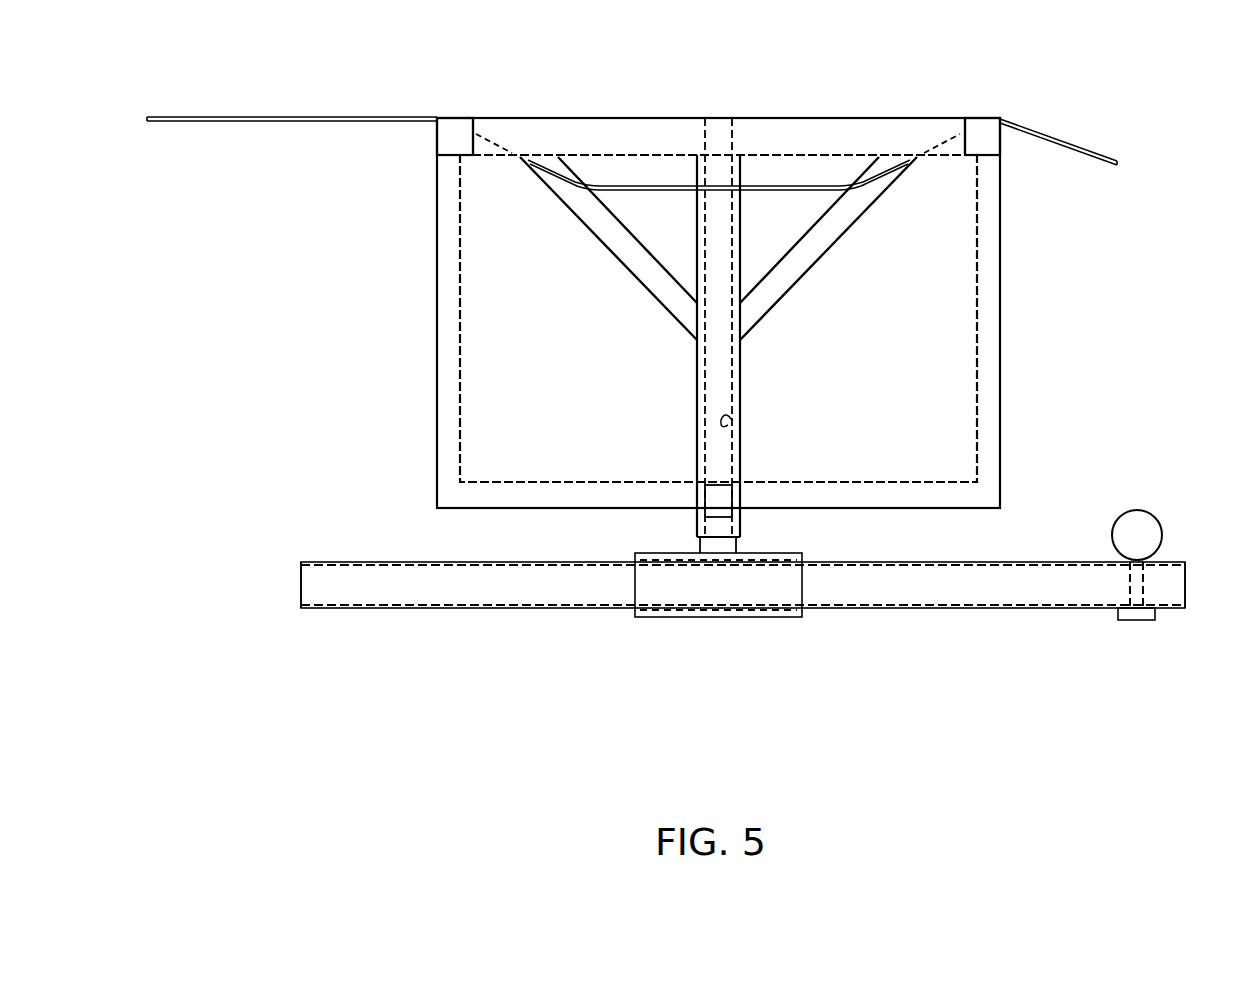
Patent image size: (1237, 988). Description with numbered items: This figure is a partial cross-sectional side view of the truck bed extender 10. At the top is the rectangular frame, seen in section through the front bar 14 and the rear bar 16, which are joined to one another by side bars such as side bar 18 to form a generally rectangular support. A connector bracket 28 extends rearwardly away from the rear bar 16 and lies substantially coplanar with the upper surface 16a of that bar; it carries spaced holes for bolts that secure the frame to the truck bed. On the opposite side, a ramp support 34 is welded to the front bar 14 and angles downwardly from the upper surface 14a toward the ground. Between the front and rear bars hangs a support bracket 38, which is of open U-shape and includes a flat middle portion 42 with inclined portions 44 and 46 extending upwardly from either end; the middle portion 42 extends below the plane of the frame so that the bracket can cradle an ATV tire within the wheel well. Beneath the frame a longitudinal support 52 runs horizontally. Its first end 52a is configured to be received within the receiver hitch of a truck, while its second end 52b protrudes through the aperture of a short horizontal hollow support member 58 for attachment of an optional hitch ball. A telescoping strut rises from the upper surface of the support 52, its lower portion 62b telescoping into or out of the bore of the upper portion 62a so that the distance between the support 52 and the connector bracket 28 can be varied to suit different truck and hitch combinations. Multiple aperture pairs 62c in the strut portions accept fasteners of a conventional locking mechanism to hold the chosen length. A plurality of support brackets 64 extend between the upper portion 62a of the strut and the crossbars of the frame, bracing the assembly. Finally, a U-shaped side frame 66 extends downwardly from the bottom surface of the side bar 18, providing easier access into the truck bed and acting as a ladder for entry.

The truck bed extender 10 is at (1108, 251).
The front bar 14 is at (985, 150).
The upper surface of front bar 14a is at (985, 114).
The rear bar 16 is at (452, 140).
The upper surface of rear bar 16a is at (455, 114).
The side bar 18 is at (620, 137).
The connector bracket 28 is at (302, 113).
The ramp support 34 is at (1056, 133).
The support bracket 38 is at (658, 212).
The flat middle portion 42 is at (654, 186).
The inclined portion 44 is at (550, 155).
The inclined portion 46 is at (893, 160).
The longitudinal support 52 is at (432, 585).
The first end of longitudinal support 52a is at (317, 586).
The second end of longitudinal support 52b is at (1048, 587).
The short horizontal hollow support member 58 is at (722, 618).
The upper portion of strut 62a is at (742, 394).
The lower portion of strut 62b is at (730, 426).
The aperture pairs 62c is at (695, 497).
The support brackets 64 is at (597, 218).
The U-shaped side frame 66 is at (449, 407).